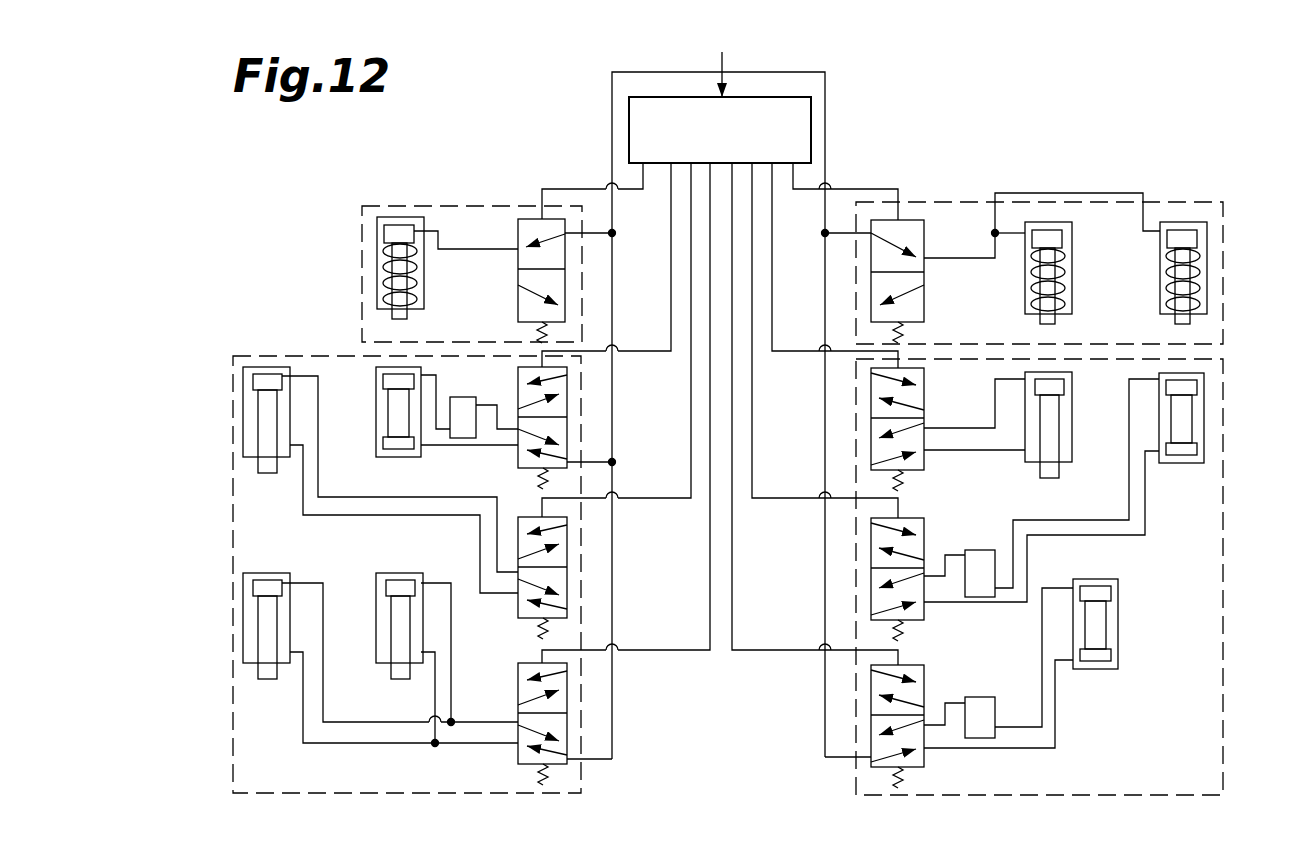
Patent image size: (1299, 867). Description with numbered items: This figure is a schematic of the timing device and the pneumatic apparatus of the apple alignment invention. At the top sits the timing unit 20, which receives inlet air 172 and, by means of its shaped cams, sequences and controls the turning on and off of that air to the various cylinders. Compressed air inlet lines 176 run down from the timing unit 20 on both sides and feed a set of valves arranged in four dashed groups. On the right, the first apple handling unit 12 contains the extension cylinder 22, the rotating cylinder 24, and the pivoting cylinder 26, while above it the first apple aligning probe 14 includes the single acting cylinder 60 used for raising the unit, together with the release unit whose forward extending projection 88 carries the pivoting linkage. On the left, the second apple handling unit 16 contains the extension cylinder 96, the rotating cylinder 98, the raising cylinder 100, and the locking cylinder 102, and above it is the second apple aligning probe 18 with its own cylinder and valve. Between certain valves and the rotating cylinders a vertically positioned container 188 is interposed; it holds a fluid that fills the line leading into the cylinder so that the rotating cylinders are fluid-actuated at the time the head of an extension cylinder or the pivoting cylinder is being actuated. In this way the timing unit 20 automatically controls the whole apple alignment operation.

The first apple handling unit 12 is at (1230, 393).
The first apple aligning probe 14 is at (1230, 280).
The second apple handling unit 16 is at (233, 490).
The second apple aligning probe 18 is at (362, 262).
The timing unit 20 is at (826, 113).
The extension cylinder 22 is at (1075, 420).
The rotating cylinder 24 is at (1208, 433).
The pivoting cylinder 26 is at (1120, 637).
The single acting cylinder 60 is at (1075, 280).
The forward extending projection 88 is at (1208, 243).
The extension cylinder 96 is at (243, 412).
The rotating cylinder 98 is at (376, 417).
The raising cylinder 100 is at (243, 627).
The locking cylinder 102 is at (376, 641).
The inlet air 172 is at (728, 62).
The compressed air inlet line 176 is at (612, 118).
The vertically positioned container 188 is at (463, 397).